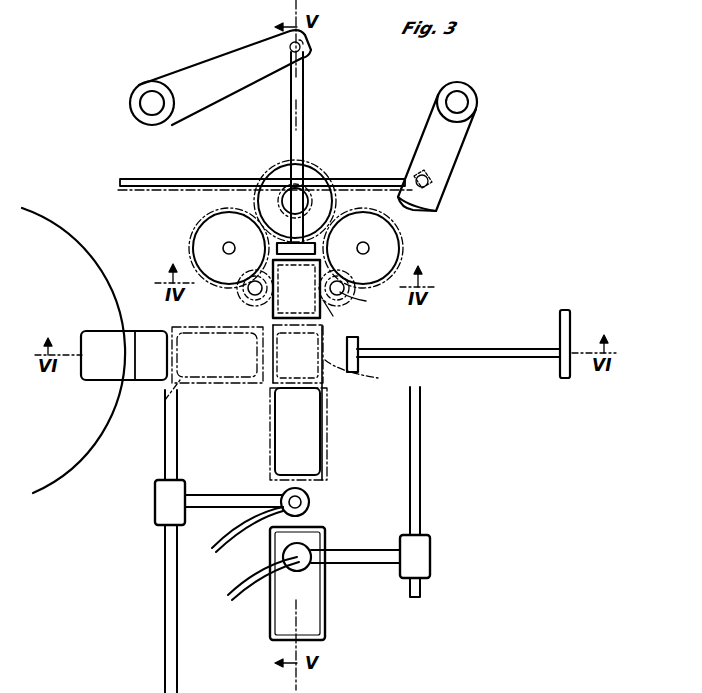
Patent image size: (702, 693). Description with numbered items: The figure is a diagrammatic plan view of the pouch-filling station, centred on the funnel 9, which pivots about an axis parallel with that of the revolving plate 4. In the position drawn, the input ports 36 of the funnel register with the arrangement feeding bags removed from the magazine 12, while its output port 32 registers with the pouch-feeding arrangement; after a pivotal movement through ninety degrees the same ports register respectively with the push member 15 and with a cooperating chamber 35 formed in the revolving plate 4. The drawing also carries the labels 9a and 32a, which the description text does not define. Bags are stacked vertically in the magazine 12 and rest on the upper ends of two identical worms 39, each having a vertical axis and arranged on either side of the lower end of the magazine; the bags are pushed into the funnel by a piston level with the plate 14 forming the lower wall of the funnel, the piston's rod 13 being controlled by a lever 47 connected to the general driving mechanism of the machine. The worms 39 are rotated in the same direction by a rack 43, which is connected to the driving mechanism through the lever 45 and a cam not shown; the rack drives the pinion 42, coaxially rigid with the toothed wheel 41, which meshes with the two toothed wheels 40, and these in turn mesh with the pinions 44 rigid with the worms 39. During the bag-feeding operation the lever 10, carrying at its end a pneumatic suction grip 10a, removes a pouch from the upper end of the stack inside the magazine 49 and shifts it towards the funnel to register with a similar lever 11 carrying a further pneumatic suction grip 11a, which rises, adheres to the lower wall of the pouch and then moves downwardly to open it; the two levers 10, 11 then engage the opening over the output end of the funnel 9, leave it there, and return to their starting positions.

The revolving plate 4 is at (62, 252).
The lever 47 is at (208, 75).
The rod 13 is at (303, 95).
The rack 43 is at (370, 178).
The toothed wheel 41 is at (275, 172).
The pinion 42 is at (315, 190).
The lever 45 is at (450, 148).
The toothed wheels 40 is at (206, 230).
The worm 39 is at (243, 298).
The pinions 44 is at (360, 296).
The magazine 12 is at (273, 312).
The input ports 36 is at (362, 353).
The cooperating chamber 35 is at (105, 345).
The article position 9a is at (237, 368).
The slider position 32a is at (155, 400).
The plate 14 is at (307, 360).
The funnel 9 is at (316, 448).
The output port 32 is at (325, 474).
The push member 15 is at (496, 348).
The lever 11 is at (212, 510).
The pneumatic suction grip 11a is at (309, 503).
The magazine 49 is at (272, 620).
The suction grip 10a is at (310, 570).
The lever 10 is at (375, 570).